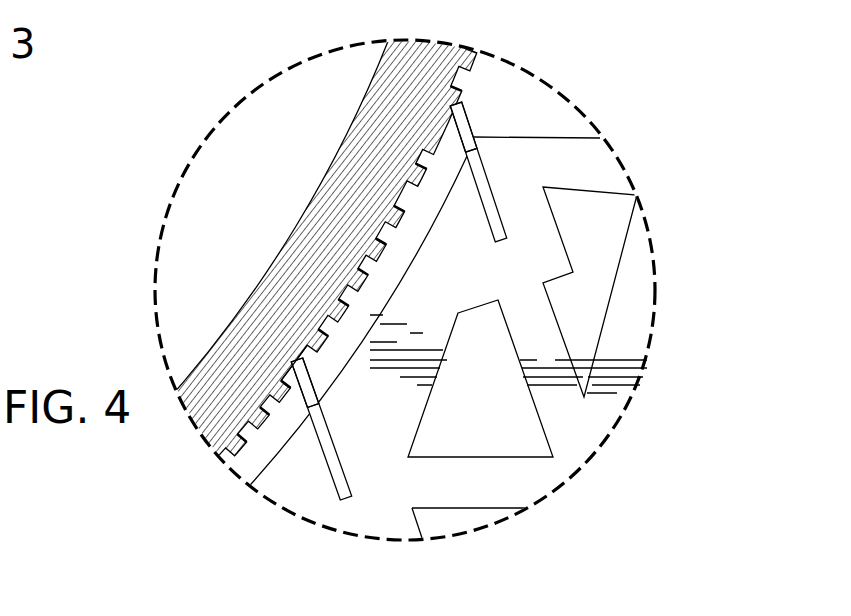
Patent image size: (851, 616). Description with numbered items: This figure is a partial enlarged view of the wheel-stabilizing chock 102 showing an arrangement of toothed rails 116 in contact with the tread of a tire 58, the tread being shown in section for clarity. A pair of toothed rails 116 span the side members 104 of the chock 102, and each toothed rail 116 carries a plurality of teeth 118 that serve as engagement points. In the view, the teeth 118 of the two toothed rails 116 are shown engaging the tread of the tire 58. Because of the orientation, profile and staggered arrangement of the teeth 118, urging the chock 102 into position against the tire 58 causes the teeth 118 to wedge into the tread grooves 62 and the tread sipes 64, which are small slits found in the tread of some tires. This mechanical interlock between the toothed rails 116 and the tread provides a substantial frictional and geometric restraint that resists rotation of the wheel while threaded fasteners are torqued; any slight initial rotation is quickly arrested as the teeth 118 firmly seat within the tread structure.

The wheel-stabilizing chock 102 is at (590, 468).
The side member 104 is at (582, 423).
The tire 58 is at (330, 165).
The tread sipe 64 is at (450, 105).
The tread groove 62 is at (292, 361).
The toothed rail 116 is at (487, 168).
The teeth 118 is at (474, 122).